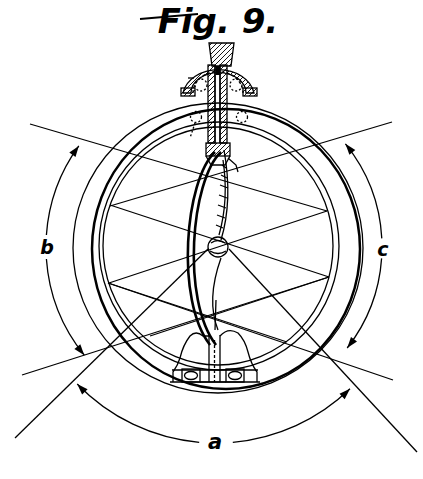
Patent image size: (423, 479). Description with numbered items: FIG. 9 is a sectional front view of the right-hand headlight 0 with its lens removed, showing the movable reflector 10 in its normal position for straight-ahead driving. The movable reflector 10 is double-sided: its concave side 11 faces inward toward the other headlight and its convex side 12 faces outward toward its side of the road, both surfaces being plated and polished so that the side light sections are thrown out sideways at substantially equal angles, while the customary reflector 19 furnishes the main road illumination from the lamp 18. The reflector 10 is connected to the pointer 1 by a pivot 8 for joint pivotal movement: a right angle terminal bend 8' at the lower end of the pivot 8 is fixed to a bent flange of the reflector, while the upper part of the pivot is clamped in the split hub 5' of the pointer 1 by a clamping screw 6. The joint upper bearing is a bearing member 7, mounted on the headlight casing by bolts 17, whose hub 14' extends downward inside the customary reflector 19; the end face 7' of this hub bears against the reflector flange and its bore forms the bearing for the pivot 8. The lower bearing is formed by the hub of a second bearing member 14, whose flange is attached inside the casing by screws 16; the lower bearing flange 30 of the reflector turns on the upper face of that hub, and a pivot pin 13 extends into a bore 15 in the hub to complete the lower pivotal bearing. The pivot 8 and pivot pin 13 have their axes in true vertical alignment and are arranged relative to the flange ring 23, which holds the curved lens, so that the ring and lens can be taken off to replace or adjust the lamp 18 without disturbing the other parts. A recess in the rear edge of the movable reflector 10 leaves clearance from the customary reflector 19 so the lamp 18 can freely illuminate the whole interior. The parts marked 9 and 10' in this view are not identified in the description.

The headlight 0 is at (293, 121).
The pointer 1 is at (188, 78).
The split hub 5' is at (192, 104).
The clamping screw 6 is at (255, 80).
The bearing member 7 is at (238, 106).
The end face 7' is at (227, 146).
The pivot 8 is at (206, 68).
The right angle terminal bend 8' is at (238, 153).
The top block 9 is at (234, 64).
The movable reflector 10 is at (238, 195).
The blade end 10' is at (249, 171).
The concave side 11 is at (212, 285).
The convex side 12 is at (192, 210).
The pivot pin 13 is at (227, 308).
The bearing member 14 is at (172, 393).
The hub 14' is at (181, 248).
The bore 15 is at (222, 387).
The screws 16 is at (295, 418).
The bolts 17 is at (190, 138).
The lamp 18 is at (229, 245).
The customary reflector 19 is at (322, 243).
The flange ring 23 is at (346, 302).
The lower bearing flange 30 is at (242, 342).